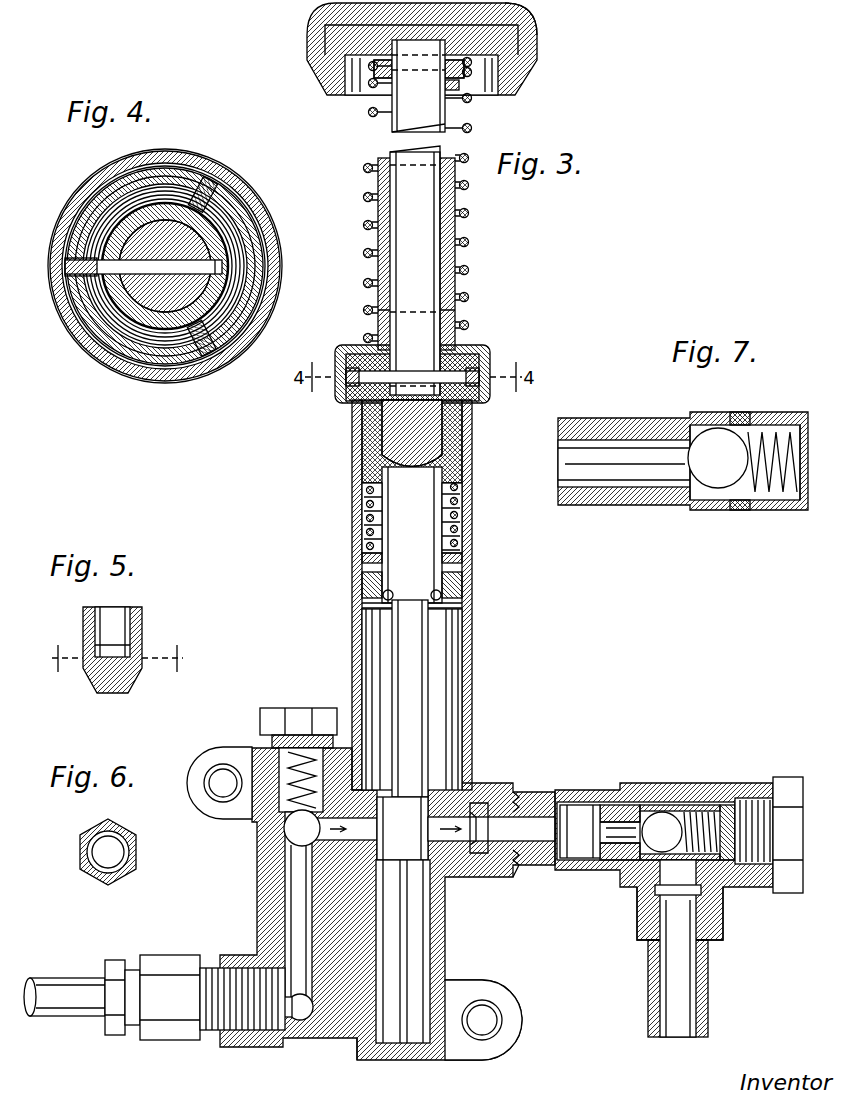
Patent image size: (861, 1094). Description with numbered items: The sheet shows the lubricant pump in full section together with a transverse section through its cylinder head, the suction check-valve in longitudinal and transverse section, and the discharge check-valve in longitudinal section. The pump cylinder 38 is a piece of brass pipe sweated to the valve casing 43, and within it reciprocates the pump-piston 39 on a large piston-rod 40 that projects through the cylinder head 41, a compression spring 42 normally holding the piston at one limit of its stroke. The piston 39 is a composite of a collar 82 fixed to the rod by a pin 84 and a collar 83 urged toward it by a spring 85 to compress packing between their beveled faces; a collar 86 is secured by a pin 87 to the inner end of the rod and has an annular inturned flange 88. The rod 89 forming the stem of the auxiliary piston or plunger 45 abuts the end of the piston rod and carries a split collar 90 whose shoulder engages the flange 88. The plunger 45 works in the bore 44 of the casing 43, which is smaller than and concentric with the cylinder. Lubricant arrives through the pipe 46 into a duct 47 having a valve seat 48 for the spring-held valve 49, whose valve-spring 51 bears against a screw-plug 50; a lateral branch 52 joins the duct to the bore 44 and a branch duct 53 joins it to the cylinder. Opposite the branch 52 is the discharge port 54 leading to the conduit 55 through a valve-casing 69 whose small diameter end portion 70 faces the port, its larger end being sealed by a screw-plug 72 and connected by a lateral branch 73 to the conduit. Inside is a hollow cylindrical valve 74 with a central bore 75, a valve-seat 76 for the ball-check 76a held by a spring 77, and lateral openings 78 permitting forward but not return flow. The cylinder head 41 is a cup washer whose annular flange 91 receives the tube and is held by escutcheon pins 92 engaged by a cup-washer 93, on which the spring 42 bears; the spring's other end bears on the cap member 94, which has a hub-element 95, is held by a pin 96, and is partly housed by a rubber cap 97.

In FIG. 3, the pump cylinder 38 is at (475, 662).
In FIG. 4, the pump cylinder 38 is at (125, 350).
In FIG. 3, the pump-piston 39 is at (470, 455).
In FIG. 3, the piston-rod 40 is at (440, 255).
In FIG. 4, the piston-rod 40 is at (120, 300).
In FIG. 3, the cylinder head 41 is at (482, 348).
In FIG. 3, the compression spring 42 is at (460, 300).
In FIG. 3, the valve casing 43 is at (343, 1042).
In FIG. 3, the bore 44 is at (425, 935).
In FIG. 3, the auxiliary piston or plunger 45 is at (420, 800).
In FIG. 3, the pipe 46 is at (57, 980).
In FIG. 3, the duct 47 is at (283, 938).
In FIG. 3, the valve seat 48 is at (312, 838).
In FIG. 3, the spring-held valve 49 is at (292, 832).
In FIG. 3, the screw-plug 50 is at (303, 708).
In FIG. 5, the screw-plug 50 is at (116, 650).
In FIG. 6, the screw-plug 50 is at (108, 852).
In FIG. 3, the valve-spring 51 is at (274, 742).
In FIG. 3, the lateral branch 52 is at (345, 858).
In FIG. 3, the branch duct 53 is at (365, 780).
In FIG. 3, the discharge port 54 is at (445, 815).
In FIG. 3, the conduit 55 is at (682, 1040).
In FIG. 3, the valve-casing 69 is at (585, 792).
In FIG. 3, the small diameter end portion 70 is at (570, 852).
In FIG. 3, the screw-plug 72 is at (790, 780).
In FIG. 3, the lateral branch 73 is at (725, 920).
In FIG. 3, the hollow cylindrical valve 74 is at (640, 805).
In FIG. 7, the hollow cylindrical valve 74 is at (645, 417).
In FIG. 3, the central bore 75 is at (590, 858).
In FIG. 7, the central bore 75 is at (640, 482).
In FIG. 3, the valve-seat 76 is at (632, 852).
In FIG. 7, the valve-seat 76 is at (685, 495).
In FIG. 3, the ball-check 76a is at (655, 823).
In FIG. 7, the ball-check 76a is at (718, 478).
In FIG. 3, the spring 77 is at (718, 800).
In FIG. 7, the spring 77 is at (770, 480).
In FIG. 3, the lateral openings 78 is at (690, 800).
In FIG. 7, the lateral openings 78 is at (740, 422).
In FIG. 3, the collar 82 is at (470, 418).
In FIG. 4, the collar 82 is at (158, 330).
In FIG. 3, the collar 83 is at (470, 483).
In FIG. 3, the pin 84 is at (470, 345).
In FIG. 4, the pin 84 is at (225, 265).
In FIG. 3, the spring 85 is at (462, 523).
In FIG. 3, the collar 86 is at (370, 585).
In FIG. 3, the pin 87 is at (365, 560).
In FIG. 3, the annular inturned flange 88 is at (385, 610).
In FIG. 3, the rod 89 is at (395, 660).
In FIG. 3, the split collar 90 is at (382, 598).
In FIG. 3, the annular flange 91 is at (352, 405).
In FIG. 4, the annular flange 91 is at (88, 335).
In FIG. 3, the escutcheon pins 92 is at (345, 377).
In FIG. 4, the escutcheon pins 92 is at (213, 190).
In FIG. 3, the cup-washer 93 is at (495, 355).
In FIG. 4, the cup-washer 93 is at (280, 272).
In FIG. 3, the cap member 94 is at (540, 50).
In FIG. 3, the hub-element 95 is at (470, 95).
In FIG. 3, the pin 96 is at (466, 72).
In FIG. 3, the rubber cap 97 is at (530, 34).